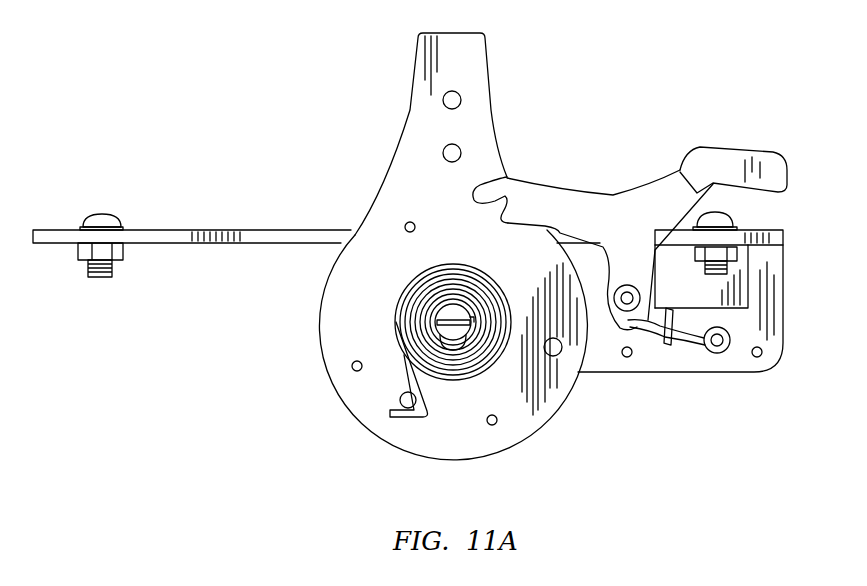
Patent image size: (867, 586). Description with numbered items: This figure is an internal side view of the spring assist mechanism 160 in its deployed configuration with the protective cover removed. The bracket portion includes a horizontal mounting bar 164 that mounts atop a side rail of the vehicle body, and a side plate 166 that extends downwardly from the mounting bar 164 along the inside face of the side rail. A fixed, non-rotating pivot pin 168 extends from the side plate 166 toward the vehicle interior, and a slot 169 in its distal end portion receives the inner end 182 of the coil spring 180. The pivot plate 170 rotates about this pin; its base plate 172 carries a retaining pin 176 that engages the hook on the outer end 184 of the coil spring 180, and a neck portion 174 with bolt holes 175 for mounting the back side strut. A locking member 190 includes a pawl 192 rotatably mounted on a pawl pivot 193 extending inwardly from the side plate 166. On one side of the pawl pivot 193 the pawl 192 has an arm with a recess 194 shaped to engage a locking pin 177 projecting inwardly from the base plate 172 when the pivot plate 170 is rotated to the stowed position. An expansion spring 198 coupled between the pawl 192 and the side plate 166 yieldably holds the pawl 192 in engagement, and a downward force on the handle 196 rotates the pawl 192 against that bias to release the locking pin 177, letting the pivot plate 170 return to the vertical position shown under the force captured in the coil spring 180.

The spring assist mechanism 160 is at (597, 48).
The horizontal mounting bar 164 is at (272, 230).
The side plate 166 is at (785, 298).
The pivot pin 168 is at (452, 335).
The slot 169 is at (437, 317).
The pivot plate 170 is at (270, 380).
The base plate 172 is at (320, 315).
The neck portion 174 is at (412, 96).
The bolt holes 175 is at (461, 100).
The retaining pin 176 is at (390, 397).
The locking pin 177 is at (562, 352).
The coil spring 180 is at (407, 285).
The inner end 182 is at (460, 317).
The outer end 184 is at (428, 415).
The locking member 190 is at (696, 98).
The pawl 192 is at (612, 194).
The pawl pivot 193 is at (627, 285).
The recess 194 is at (508, 217).
The handle 196 is at (788, 176).
The expansion spring 198 is at (678, 346).